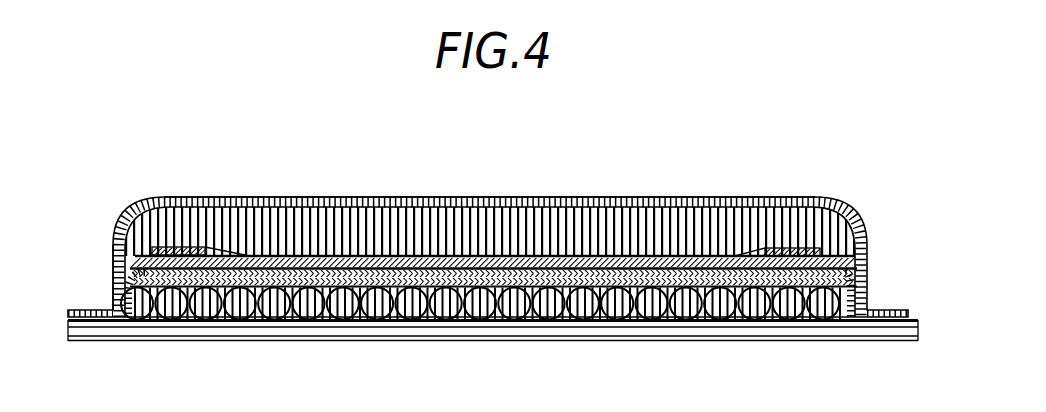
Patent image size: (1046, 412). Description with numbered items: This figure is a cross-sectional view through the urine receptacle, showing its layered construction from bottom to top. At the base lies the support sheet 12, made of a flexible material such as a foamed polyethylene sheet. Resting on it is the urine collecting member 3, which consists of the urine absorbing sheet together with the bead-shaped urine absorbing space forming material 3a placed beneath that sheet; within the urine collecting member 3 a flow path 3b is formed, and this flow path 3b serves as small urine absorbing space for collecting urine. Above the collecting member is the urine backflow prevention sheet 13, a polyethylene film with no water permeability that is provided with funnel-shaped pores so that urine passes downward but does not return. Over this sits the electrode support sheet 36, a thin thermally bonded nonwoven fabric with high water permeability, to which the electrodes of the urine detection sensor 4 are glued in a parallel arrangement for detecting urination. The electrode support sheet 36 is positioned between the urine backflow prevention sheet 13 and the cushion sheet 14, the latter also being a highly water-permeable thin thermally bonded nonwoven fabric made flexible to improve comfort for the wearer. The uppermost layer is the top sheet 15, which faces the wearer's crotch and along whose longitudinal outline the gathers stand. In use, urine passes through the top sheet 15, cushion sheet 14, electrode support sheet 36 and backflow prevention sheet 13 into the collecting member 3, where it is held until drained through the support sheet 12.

The urine collecting member 3 is at (863, 282).
The urine absorbing space forming material 3a is at (863, 304).
The flow path 3b is at (740, 318).
The urine detection sensor 4 is at (113, 262).
The support sheet 12 is at (508, 328).
The urine backflow prevention sheet 13 is at (572, 237).
The cushion sheet 14 is at (863, 233).
The top sheet 15 is at (281, 197).
The electrode support sheet 36 is at (480, 226).